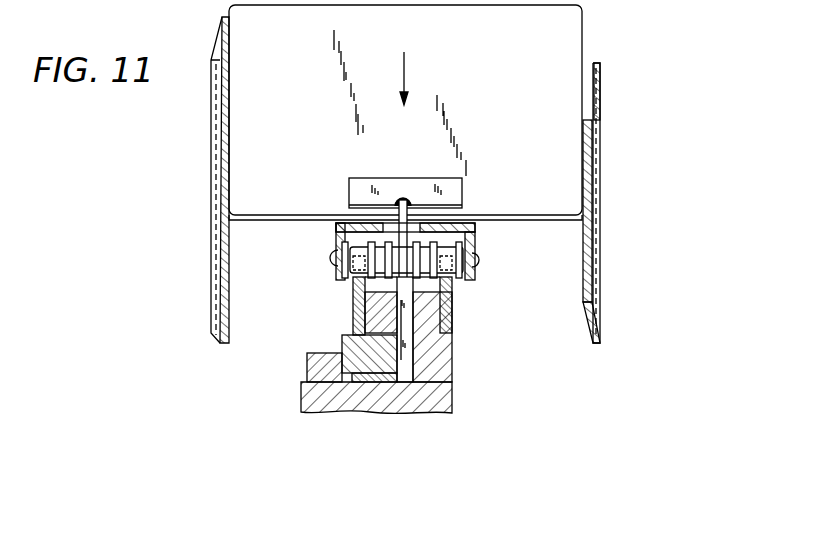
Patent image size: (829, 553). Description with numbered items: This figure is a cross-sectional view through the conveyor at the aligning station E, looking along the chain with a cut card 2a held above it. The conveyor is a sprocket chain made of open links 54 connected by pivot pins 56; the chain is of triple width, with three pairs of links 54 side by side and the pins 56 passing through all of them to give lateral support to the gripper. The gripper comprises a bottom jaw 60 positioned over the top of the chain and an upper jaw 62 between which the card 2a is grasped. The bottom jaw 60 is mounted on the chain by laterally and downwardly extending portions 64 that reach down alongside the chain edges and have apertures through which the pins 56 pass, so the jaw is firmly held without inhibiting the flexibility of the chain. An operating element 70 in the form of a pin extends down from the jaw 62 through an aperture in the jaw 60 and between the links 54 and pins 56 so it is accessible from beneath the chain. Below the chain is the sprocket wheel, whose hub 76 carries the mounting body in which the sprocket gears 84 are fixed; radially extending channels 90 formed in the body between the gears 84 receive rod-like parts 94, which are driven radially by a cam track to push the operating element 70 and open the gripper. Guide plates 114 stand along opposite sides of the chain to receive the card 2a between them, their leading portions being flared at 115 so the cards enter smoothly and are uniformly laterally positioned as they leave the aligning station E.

The cut card 2a is at (488, 77).
The link 54 is at (365, 297).
The pivot pin 56 is at (472, 262).
The bottom jaw 60 is at (475, 227).
The jaw 62 is at (462, 207).
The laterally and downwardly extending portion 64 is at (342, 276).
The operating element 70 is at (338, 262).
The hub 76 is at (303, 396).
The sprocket gear 84 is at (353, 321).
The radial channel 90 is at (401, 332).
The rod-like part 94 is at (403, 320).
The guide plate 114 is at (222, 272).
The flared leading portion 115 is at (217, 236).
The aligning station E is at (618, 176).